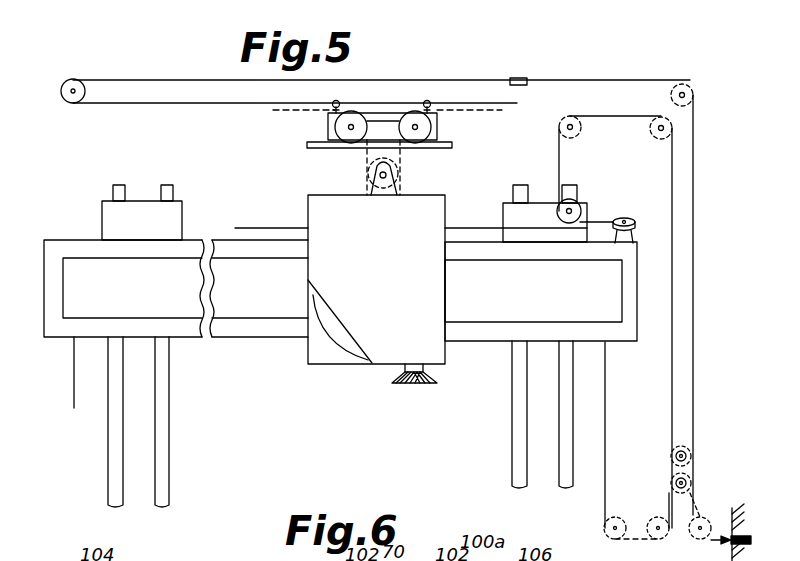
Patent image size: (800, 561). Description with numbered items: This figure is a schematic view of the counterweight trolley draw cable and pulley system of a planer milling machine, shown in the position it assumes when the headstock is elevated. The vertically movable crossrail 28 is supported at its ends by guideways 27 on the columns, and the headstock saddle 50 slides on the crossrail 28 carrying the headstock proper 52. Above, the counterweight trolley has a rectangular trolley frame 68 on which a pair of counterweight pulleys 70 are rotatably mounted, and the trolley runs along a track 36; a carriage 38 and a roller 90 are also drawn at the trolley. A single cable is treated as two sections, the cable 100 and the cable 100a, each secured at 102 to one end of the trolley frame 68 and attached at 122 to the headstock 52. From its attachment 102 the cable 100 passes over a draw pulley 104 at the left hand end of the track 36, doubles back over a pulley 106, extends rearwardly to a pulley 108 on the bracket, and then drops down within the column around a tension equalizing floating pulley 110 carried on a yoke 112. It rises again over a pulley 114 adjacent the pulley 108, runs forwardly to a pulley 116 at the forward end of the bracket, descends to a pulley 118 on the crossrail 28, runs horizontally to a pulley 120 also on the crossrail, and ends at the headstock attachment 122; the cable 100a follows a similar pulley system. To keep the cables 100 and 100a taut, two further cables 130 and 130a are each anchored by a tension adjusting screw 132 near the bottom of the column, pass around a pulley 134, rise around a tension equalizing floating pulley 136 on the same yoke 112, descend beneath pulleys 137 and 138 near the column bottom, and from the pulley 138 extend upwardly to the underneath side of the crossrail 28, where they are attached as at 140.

The guideways 27 is at (115, 435).
The crossrail 28 is at (246, 331).
The track 36 is at (316, 151).
The carriage 38 is at (326, 127).
The headstock saddle 50 is at (330, 354).
The headstock proper 52 is at (440, 362).
The trolley frame 68 is at (378, 118).
The counterweight pulleys 70 is at (353, 112).
The pivot roller 90 is at (401, 167).
The cable 100 is at (593, 80).
The cable 100a is at (477, 103).
The attachment point 102 is at (338, 100).
The draw pulley 104 is at (80, 82).
The pulley 106 is at (522, 80).
The pulley 108 is at (691, 88).
The tension equalizing floating pulley 110 is at (686, 446).
The yoke 112 is at (690, 466).
The pulley 114 is at (672, 126).
The pulley 116 is at (572, 116).
The pulley 118 is at (575, 205).
The pulley 120 is at (616, 218).
The attachment point 122 is at (307, 215).
The cable 130 is at (605, 428).
The cable 130a is at (74, 382).
The tension adjusting screw 132 is at (723, 532).
The pulley 134 is at (688, 540).
The tension equalizing floating pulley 136 is at (692, 484).
The pulley 137 is at (656, 518).
The pulley 138 is at (606, 538).
The attachment point 140 is at (73, 340).